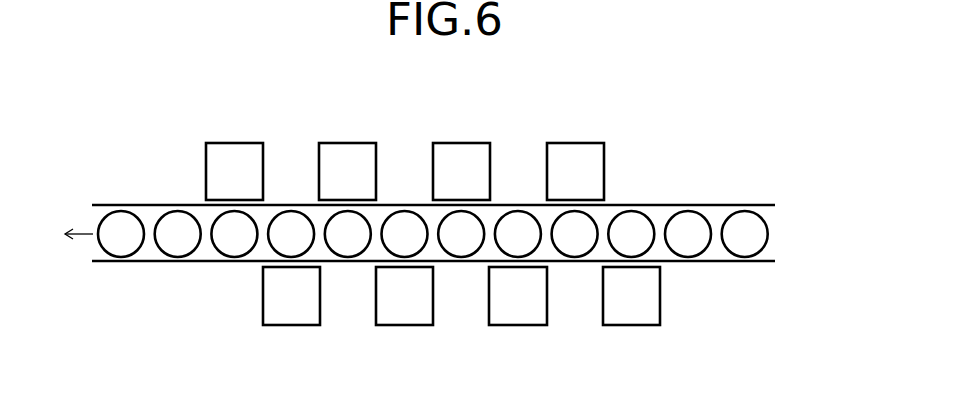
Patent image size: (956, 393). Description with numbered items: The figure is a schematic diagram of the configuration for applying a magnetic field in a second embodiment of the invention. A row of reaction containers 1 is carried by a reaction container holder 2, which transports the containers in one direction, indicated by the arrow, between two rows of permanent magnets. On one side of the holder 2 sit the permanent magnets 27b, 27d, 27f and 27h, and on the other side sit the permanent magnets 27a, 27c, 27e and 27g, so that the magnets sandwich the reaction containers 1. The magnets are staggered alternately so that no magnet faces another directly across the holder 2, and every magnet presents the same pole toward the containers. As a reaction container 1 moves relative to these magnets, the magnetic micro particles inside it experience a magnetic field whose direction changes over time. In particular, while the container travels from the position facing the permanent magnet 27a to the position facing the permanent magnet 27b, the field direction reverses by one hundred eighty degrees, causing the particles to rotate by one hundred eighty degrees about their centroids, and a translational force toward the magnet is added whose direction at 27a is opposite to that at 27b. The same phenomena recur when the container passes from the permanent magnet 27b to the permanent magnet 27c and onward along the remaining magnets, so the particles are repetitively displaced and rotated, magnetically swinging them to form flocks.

The reaction container 1 is at (768, 226).
The reaction container holder 2 is at (737, 205).
The permanent magnet 27a is at (638, 325).
The permanent magnet 27b is at (583, 143).
The permanent magnet 27c is at (525, 325).
The permanent magnet 27d is at (469, 143).
The permanent magnet 27e is at (411, 325).
The permanent magnet 27f is at (355, 143).
The permanent magnet 27g is at (298, 325).
The permanent magnet 27h is at (245, 143).